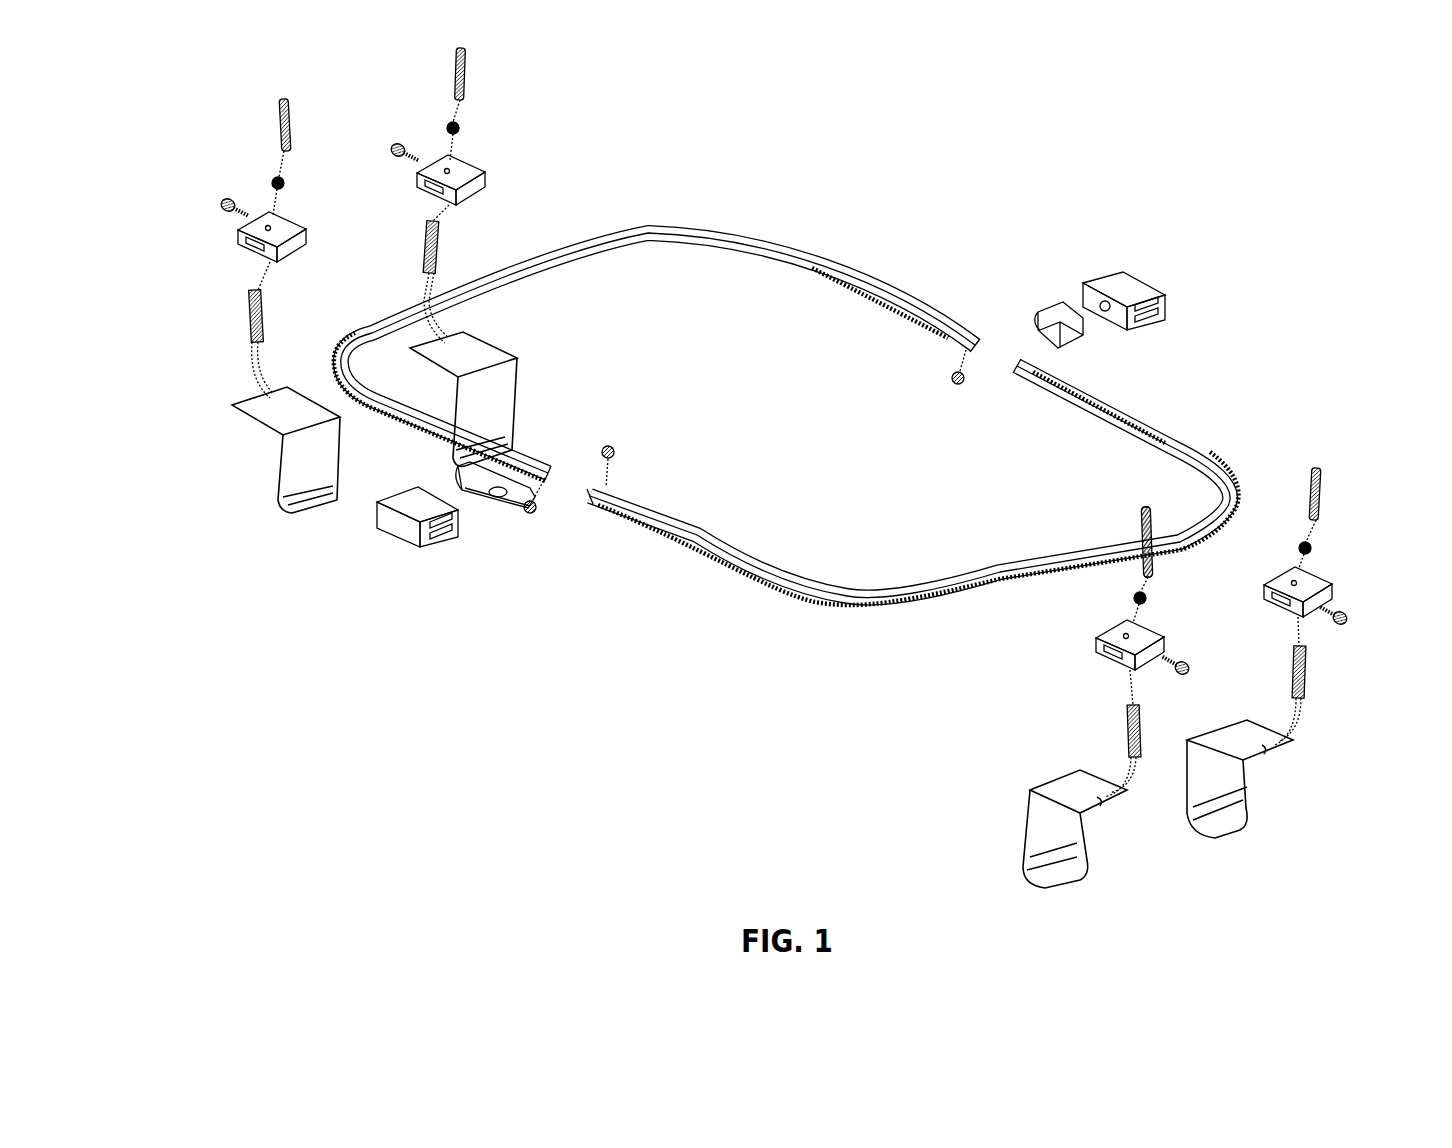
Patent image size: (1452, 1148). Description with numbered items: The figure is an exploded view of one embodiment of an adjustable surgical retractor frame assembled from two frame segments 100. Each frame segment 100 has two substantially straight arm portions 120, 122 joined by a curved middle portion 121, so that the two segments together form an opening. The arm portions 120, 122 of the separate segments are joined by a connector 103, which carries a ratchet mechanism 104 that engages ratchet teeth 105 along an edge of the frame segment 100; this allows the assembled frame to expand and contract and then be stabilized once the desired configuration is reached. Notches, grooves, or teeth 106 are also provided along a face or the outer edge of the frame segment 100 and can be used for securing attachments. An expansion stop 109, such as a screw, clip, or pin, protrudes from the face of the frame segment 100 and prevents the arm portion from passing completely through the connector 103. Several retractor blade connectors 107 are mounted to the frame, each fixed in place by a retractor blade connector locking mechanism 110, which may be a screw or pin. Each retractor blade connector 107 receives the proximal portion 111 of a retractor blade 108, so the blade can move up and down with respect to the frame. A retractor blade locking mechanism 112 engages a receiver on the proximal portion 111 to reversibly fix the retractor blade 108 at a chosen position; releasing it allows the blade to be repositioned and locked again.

The frame segment 100 is at (1039, 518).
The connector 103 is at (397, 517).
The ratchet mechanism 104 is at (505, 503).
The ratchet teeth 105 is at (1060, 388).
The notches, grooves, or teeth 106 is at (430, 425).
The retractor blade connector 107 is at (482, 160).
The retractor blade 108 is at (297, 493).
The expansion stop 109 is at (535, 520).
The retractor blade connector locking mechanism 110 is at (448, 62).
The proximal portion of retractor blade 111 is at (440, 250).
The retractor blade locking mechanism 112 is at (238, 198).
The arm portion 120 is at (697, 528).
The middle portion 121 is at (547, 260).
The arm portion 122 is at (502, 442).